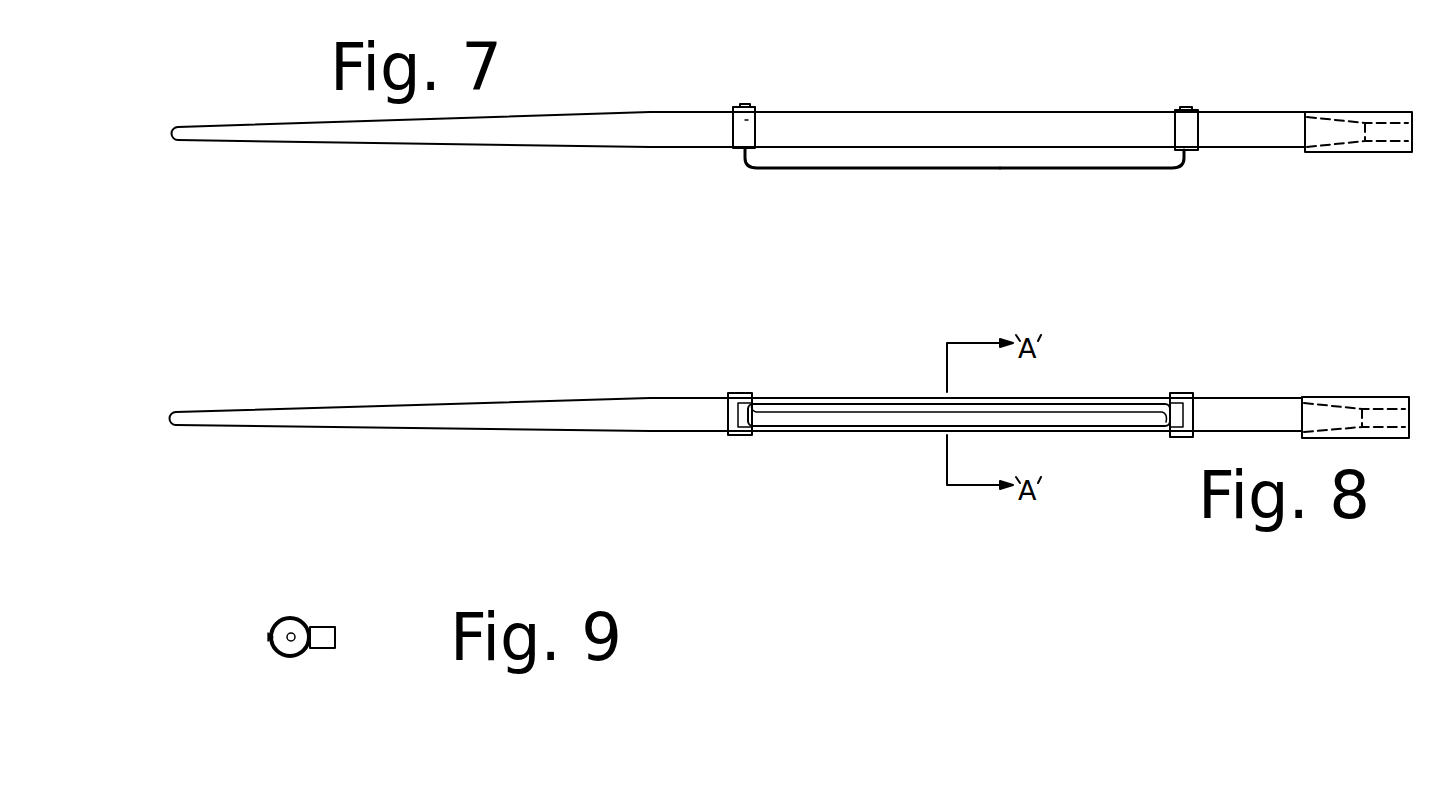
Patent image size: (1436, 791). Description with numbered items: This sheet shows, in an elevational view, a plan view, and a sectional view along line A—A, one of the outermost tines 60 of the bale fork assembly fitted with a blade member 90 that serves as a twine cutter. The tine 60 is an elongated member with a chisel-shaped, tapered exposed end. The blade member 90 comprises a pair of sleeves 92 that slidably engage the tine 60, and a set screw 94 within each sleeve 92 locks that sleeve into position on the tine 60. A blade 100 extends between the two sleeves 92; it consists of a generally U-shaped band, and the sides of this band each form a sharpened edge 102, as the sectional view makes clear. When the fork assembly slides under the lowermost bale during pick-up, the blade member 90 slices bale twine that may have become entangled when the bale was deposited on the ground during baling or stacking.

In FIG. 7, the tine 60 is at (680, 120).
In FIG. 8, the tine 60 is at (678, 408).
In FIG. 9, the tine 60 is at (298, 625).
In FIG. 7, the blade member 90 is at (995, 170).
In FIG. 8, the blade member 90 is at (845, 418).
In FIG. 7, the sleeve 92 is at (745, 120).
In FIG. 7, the set screw 94 is at (746, 106).
In FIG. 8, the set screw 94 is at (960, 415).
In FIG. 7, the blade 100 is at (1075, 170).
In FIG. 8, the blade 100 is at (1080, 415).
In FIG. 9, the blade 100 is at (338, 636).
In FIG. 8, the sharpened edge 102 is at (778, 410).